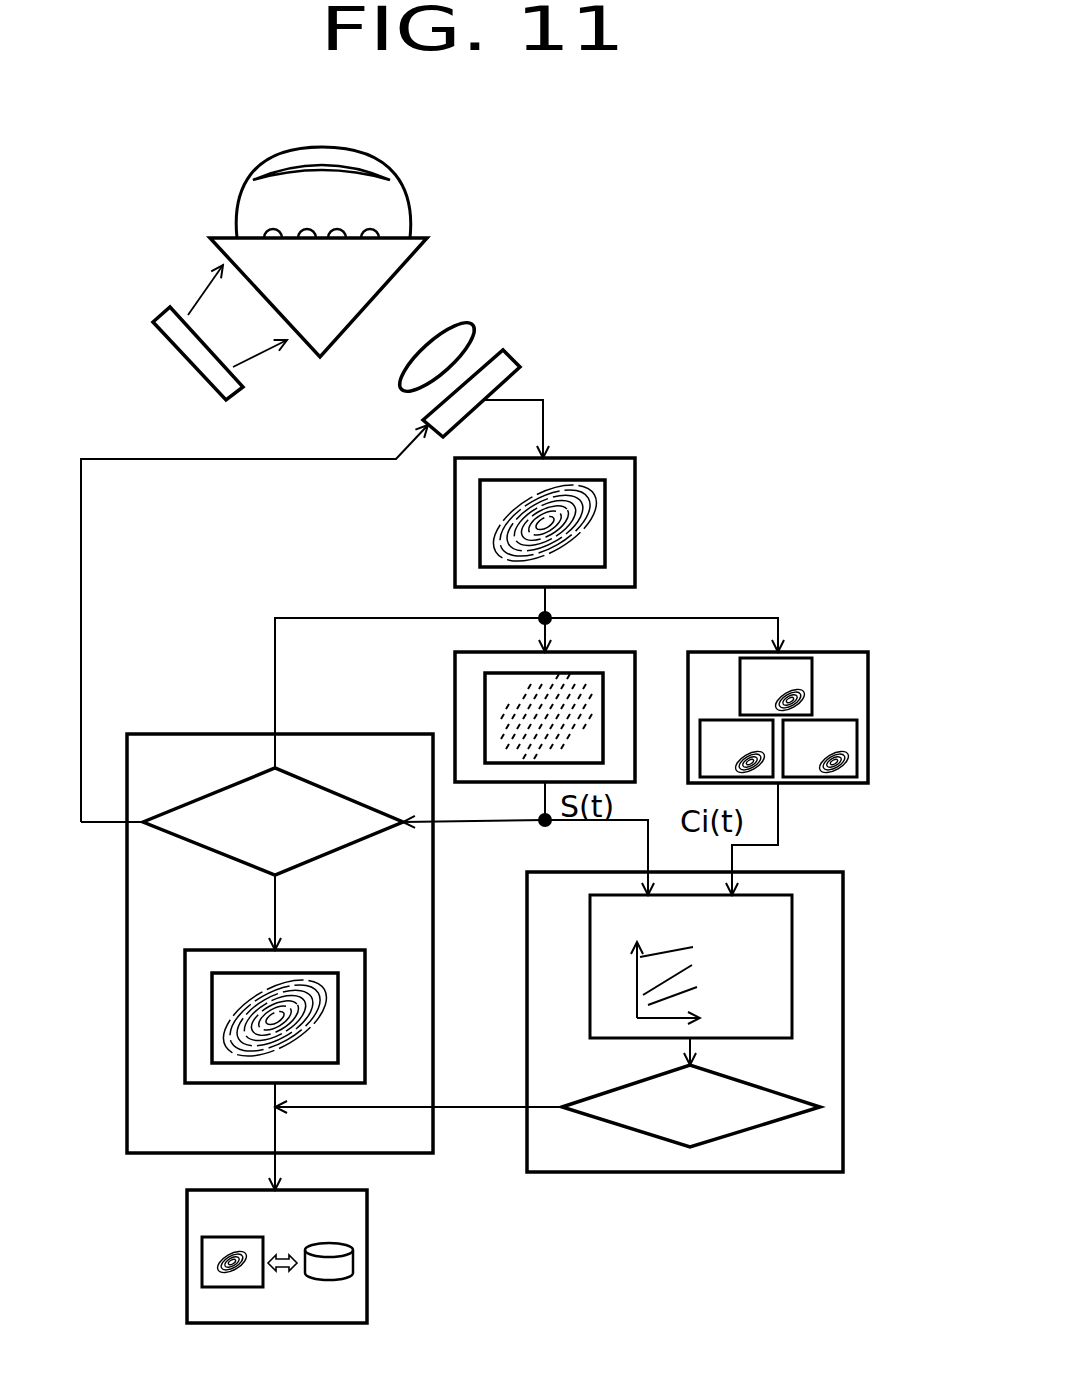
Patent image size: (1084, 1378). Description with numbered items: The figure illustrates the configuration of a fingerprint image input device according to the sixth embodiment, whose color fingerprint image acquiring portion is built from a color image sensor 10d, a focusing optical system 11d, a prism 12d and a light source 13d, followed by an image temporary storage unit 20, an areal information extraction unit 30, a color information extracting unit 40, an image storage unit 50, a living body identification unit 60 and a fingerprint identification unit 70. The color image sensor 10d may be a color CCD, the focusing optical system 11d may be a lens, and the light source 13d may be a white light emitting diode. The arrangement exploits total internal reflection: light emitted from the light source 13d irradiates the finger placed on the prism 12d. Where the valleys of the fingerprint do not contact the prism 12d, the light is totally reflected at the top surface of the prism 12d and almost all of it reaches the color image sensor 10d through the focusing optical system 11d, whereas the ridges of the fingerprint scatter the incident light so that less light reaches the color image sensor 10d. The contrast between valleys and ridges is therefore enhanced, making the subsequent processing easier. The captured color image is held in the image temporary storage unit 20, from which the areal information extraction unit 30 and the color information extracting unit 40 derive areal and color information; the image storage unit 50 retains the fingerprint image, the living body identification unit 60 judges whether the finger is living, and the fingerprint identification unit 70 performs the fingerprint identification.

The color image sensor 10d is at (527, 347).
The focusing optical system 11d is at (467, 325).
The prism 12d is at (413, 240).
The light source 13d is at (190, 367).
The image temporary storage unit 20 is at (637, 488).
The areal information extraction unit 30 is at (455, 684).
The color information extracting unit 40 is at (793, 653).
The image storage unit 50 is at (433, 950).
The living body identification unit 60 is at (843, 1045).
The fingerprint identification unit 70 is at (367, 1258).